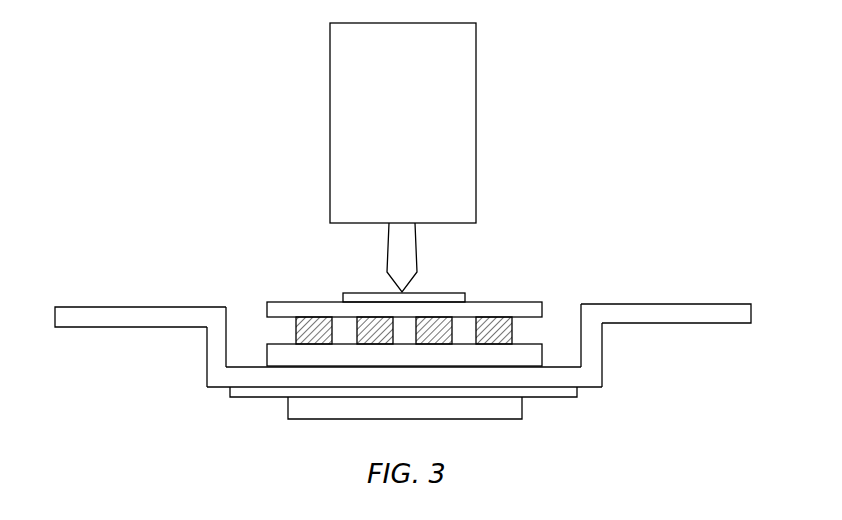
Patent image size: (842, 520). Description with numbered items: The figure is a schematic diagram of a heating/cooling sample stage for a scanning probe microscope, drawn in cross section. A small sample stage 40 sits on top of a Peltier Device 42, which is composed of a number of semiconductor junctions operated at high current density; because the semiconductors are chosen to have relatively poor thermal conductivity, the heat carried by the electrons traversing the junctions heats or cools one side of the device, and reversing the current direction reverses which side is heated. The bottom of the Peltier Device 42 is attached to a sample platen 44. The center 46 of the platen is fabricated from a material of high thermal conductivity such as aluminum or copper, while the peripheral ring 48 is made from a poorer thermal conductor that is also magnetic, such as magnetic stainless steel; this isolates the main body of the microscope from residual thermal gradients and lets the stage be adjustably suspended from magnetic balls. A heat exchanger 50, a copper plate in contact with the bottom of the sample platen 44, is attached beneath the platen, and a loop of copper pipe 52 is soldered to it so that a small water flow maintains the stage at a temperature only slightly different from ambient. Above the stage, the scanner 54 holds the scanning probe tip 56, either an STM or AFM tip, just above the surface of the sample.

The scanner 54 is at (416, 135).
The scanning probe tip 56 is at (408, 280).
The sample stage 40 is at (463, 296).
The Peltier Device 42 is at (512, 332).
The peripheral ring 48 is at (105, 312).
The center of platen 46 is at (207, 378).
The sample platen 44 is at (593, 377).
The heat exchanger 50 is at (578, 392).
The copper pipe 52 is at (510, 405).